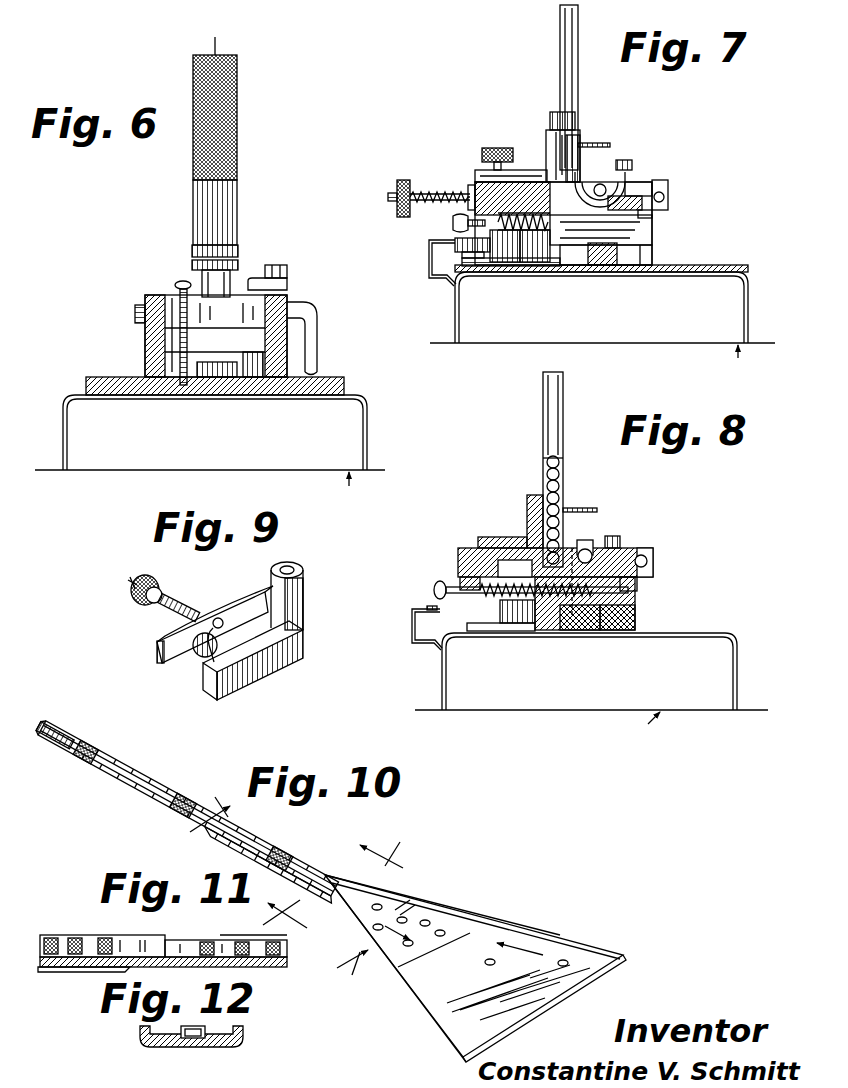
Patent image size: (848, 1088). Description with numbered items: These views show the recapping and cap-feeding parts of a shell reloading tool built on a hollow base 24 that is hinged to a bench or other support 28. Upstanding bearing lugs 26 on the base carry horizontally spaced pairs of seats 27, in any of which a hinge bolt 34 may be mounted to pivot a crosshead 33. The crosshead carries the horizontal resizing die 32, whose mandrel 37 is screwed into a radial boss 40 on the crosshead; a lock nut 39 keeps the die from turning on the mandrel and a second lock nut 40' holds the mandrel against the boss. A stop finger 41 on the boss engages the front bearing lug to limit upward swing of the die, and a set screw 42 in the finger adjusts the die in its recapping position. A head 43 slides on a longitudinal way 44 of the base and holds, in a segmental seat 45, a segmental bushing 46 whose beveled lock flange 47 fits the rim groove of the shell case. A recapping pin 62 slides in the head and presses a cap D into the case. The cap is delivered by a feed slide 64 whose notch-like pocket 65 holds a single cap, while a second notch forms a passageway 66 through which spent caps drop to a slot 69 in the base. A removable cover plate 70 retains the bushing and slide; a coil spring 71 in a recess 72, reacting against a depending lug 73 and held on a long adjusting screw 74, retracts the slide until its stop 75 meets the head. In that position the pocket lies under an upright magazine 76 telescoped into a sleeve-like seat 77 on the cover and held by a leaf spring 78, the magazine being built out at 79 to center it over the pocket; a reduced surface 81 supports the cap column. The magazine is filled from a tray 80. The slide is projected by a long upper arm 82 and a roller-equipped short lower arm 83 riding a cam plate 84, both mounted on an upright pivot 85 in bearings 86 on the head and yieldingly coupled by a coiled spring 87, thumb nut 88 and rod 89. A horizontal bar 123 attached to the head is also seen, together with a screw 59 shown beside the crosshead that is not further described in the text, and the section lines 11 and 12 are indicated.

In FIG. 6, the hollow base 24 is at (63, 437).
In FIG. 7, the hollow base 24 is at (462, 325).
In FIG. 8, the hollow base 24 is at (447, 683).
In FIG. 6, the bearing lugs 26 is at (150, 347).
In FIG. 6, the seats 27 is at (144, 312).
In FIG. 6, the bench or other support 28 is at (355, 490).
In FIG. 7, the bench or other support 28 is at (725, 362).
In FIG. 8, the bench or other support 28 is at (640, 734).
In FIG. 6, the resizing die 32 is at (230, 207).
In FIG. 6, the crosshead 33 is at (216, 336).
In FIG. 6, the hinge bolt 34 is at (300, 318).
In FIG. 6, the mandrel 37 is at (218, 243).
In FIG. 6, the lock nut 39 is at (238, 247).
In FIG. 6, the radial boss 40 is at (255, 264).
In FIG. 6, the lock nut 40' is at (187, 257).
In FIG. 6, the stop finger 41 is at (287, 283).
In FIG. 6, the set screw 42 is at (287, 270).
In FIG. 6, the sliding head 43 is at (255, 356).
In FIG. 7, the sliding head 43 is at (655, 228).
In FIG. 8, the sliding head 43 is at (640, 600).
In FIG. 7, the longitudinal way 44 is at (655, 250).
In FIG. 8, the longitudinal way 44 is at (640, 615).
In FIG. 7, the segmental seat 45 is at (630, 209).
In FIG. 7, the segmental bushing 46 is at (628, 190).
In FIG. 7, the segmental lock flange 47 is at (618, 198).
In FIG. 6, the screw 59 is at (180, 335).
In FIG. 7, the recapping pin 62 is at (605, 193).
In FIG. 8, the recapping pin 62 is at (585, 545).
In FIG. 7, the feed slide 64 is at (665, 190).
In FIG. 8, the feed slide 64 is at (653, 560).
In FIG. 8, the cap pocket 65 is at (540, 578).
In FIG. 7, the passageway 66 is at (600, 184).
In FIG. 8, the passageway 66 is at (590, 552).
In FIG. 7, the slot 69 is at (608, 275).
In FIG. 7, the cover plate 70 is at (628, 170).
In FIG. 8, the cover plate 70 is at (613, 540).
In FIG. 7, the coil spring 71 is at (525, 237).
In FIG. 8, the coil spring 71 is at (520, 605).
In FIG. 8, the bore-like recess 72 is at (645, 590).
In FIG. 7, the depending lug 73 is at (453, 222).
In FIG. 8, the depending lug 73 is at (465, 580).
In FIG. 7, the adjusting screw 74 is at (455, 245).
In FIG. 8, the adjusting screw 74 is at (437, 590).
In FIG. 7, the stop 75 is at (668, 200).
In FIG. 8, the stop 75 is at (648, 560).
In FIG. 7, the magazine 76 is at (560, 60).
In FIG. 8, the magazine 76 is at (545, 445).
In FIG. 10, the magazine 76 is at (141, 779).
In FIG. 11, the magazine 76 is at (62, 935).
In FIG. 12, the magazine 76 is at (205, 1030).
In FIG. 7, the sleeve-like seat 77 is at (578, 140).
In FIG. 8, the sleeve-like seat 77 is at (530, 514).
In FIG. 7, the leaf spring 78 is at (597, 150).
In FIG. 8, the leaf spring 78 is at (572, 508).
In FIG. 7, the built-out portion 79 is at (558, 100).
In FIG. 8, the built-out portion 79 is at (500, 540).
In FIG. 10, the built-out portion 79 is at (75, 730).
In FIG. 10, the tray 80 is at (465, 915).
In FIG. 11, the tray 80 is at (287, 948).
In FIG. 12, the tray 80 is at (244, 1037).
In FIG. 7, the reduced surface 81 is at (522, 186).
In FIG. 8, the reduced surface 81 is at (500, 565).
In FIG. 7, the long upper arm 82 is at (470, 192).
In FIG. 9, the long upper arm 82 is at (160, 647).
In FIG. 7, the short lower arm 83 is at (508, 262).
In FIG. 9, the short lower arm 83 is at (255, 677).
In FIG. 7, the cam plate 84 is at (432, 262).
In FIG. 8, the cam plate 84 is at (415, 625).
In FIG. 7, the upright pivot 85 is at (482, 153).
In FIG. 7, the bearings 86 is at (512, 172).
In FIG. 8, the bearings 86 is at (520, 632).
In FIG. 7, the coiled spring 87 is at (432, 192).
In FIG. 9, the coiled spring 87 is at (185, 608).
In FIG. 7, the thumb nut 88 is at (404, 180).
In FIG. 9, the thumb nut 88 is at (147, 578).
In FIG. 7, the rod 89 is at (392, 196).
In FIG. 9, the rod 89 is at (128, 584).
In FIG. 6, the horizontal bar 123 is at (205, 372).
In FIG. 7, the horizontal bar 123 is at (607, 258).
In FIG. 8, the horizontal bar 123 is at (598, 625).
In FIG. 10, the section line 11 is at (284, 887).
In FIG. 10, the section line 12 is at (342, 885).
In FIG. 8, the cap D is at (545, 462).
In FIG. 11, the cap D is at (246, 936).